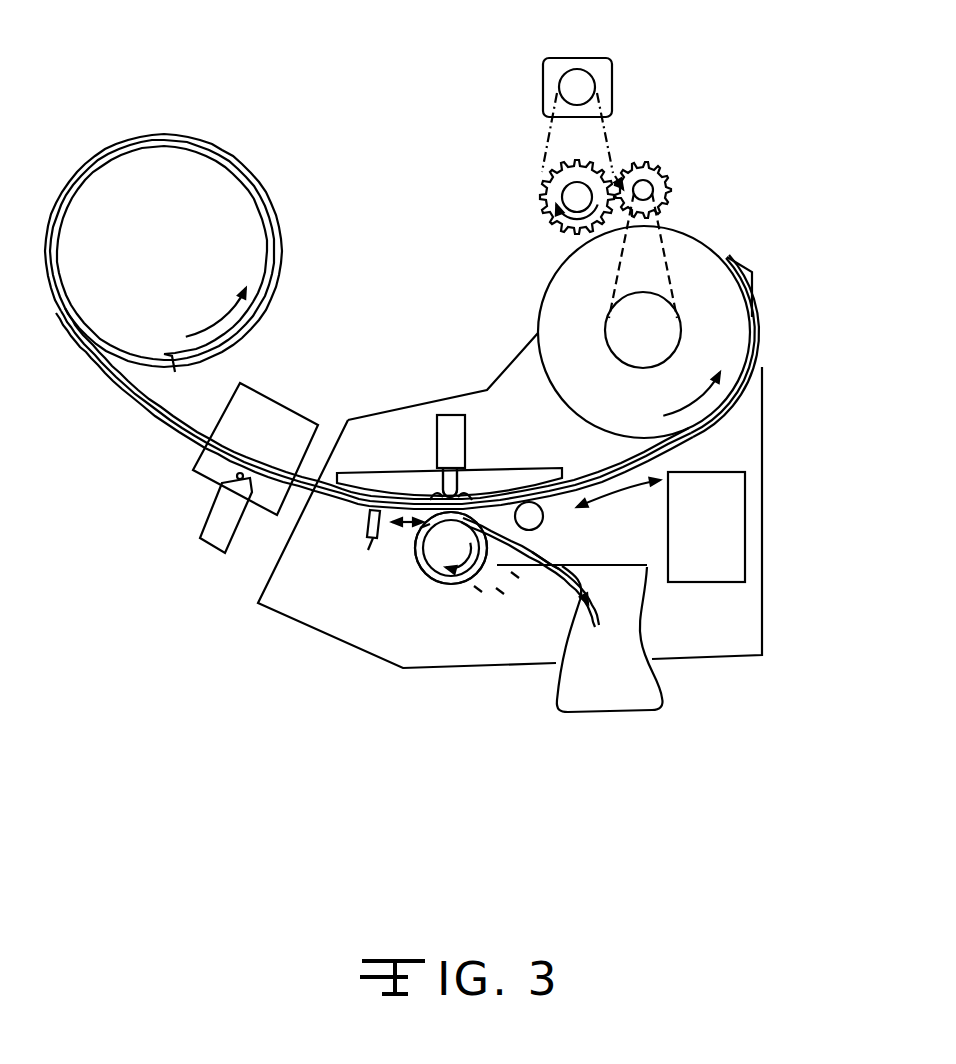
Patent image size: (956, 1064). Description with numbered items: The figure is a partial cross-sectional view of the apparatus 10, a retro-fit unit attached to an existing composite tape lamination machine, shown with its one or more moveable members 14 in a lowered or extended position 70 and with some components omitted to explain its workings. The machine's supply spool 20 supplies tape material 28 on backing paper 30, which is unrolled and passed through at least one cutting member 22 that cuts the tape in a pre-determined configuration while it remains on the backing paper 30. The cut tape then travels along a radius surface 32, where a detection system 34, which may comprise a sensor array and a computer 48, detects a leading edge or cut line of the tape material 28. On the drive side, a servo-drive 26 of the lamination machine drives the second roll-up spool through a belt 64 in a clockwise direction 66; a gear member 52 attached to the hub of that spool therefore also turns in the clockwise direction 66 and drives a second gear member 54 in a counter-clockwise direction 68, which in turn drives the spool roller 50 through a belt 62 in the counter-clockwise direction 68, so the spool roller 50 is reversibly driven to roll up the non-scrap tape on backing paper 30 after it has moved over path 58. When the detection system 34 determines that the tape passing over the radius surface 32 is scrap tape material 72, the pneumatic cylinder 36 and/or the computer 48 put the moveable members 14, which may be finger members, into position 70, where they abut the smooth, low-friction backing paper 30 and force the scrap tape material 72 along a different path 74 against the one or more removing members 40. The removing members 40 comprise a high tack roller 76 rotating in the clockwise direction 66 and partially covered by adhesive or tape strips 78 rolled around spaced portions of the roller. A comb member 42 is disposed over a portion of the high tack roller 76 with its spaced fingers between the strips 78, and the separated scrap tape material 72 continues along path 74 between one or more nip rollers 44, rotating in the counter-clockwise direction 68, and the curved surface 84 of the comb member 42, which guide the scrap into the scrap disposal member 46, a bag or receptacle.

The apparatus 10 is at (737, 632).
The moveable member 14 is at (452, 478).
The supply spool 20 is at (182, 175).
The cutting member 22 is at (215, 523).
The servo-drive 26 is at (590, 58).
The tape material 28 is at (68, 313).
The backing paper 30 is at (76, 188).
The radius surface 32 is at (398, 493).
The detection system 34 is at (368, 547).
The pneumatic cylinder 36 is at (457, 427).
The removing member 40 is at (430, 578).
The comb member 42 is at (515, 575).
The nip roller 44 is at (548, 518).
The scrap disposal member 46 is at (657, 693).
The computer 48 is at (744, 557).
The spool roller 50 is at (706, 254).
The gear member 52 is at (550, 222).
The gear member 54 is at (655, 162).
The path 58 is at (632, 490).
The belt 62 is at (697, 258).
The belt 64 is at (550, 123).
The clockwise direction 66 is at (550, 220).
The counter-clockwise direction 68 is at (632, 158).
The lowered position 70 is at (452, 478).
The scrap tape material 72 is at (392, 530).
The path 74 is at (425, 526).
The high tack roller 76 is at (430, 578).
The adhesive/tape strips 78 is at (478, 590).
The curved surface 84 is at (500, 592).